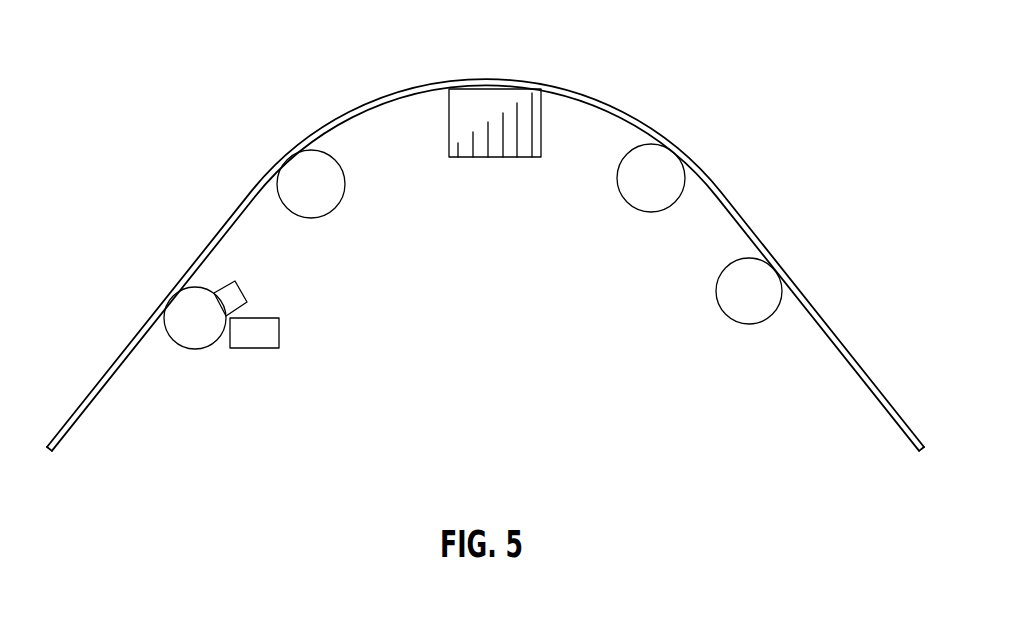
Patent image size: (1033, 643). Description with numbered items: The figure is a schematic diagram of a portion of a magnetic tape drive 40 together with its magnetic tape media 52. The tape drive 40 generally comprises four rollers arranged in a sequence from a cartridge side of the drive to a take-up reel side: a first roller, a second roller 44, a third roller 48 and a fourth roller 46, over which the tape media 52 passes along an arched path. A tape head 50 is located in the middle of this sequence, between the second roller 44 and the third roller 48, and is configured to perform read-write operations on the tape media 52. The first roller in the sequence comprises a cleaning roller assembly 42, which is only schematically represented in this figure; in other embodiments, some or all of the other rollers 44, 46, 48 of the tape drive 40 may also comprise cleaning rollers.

The magnetic tape drive 40 is at (146, 52).
The cleaning roller assembly 42 is at (245, 338).
The second roller 44 is at (302, 176).
The fourth roller 46 is at (750, 292).
The third roller 48 is at (653, 192).
The tape head 50 is at (497, 97).
The magnetic tape media 52 is at (670, 142).